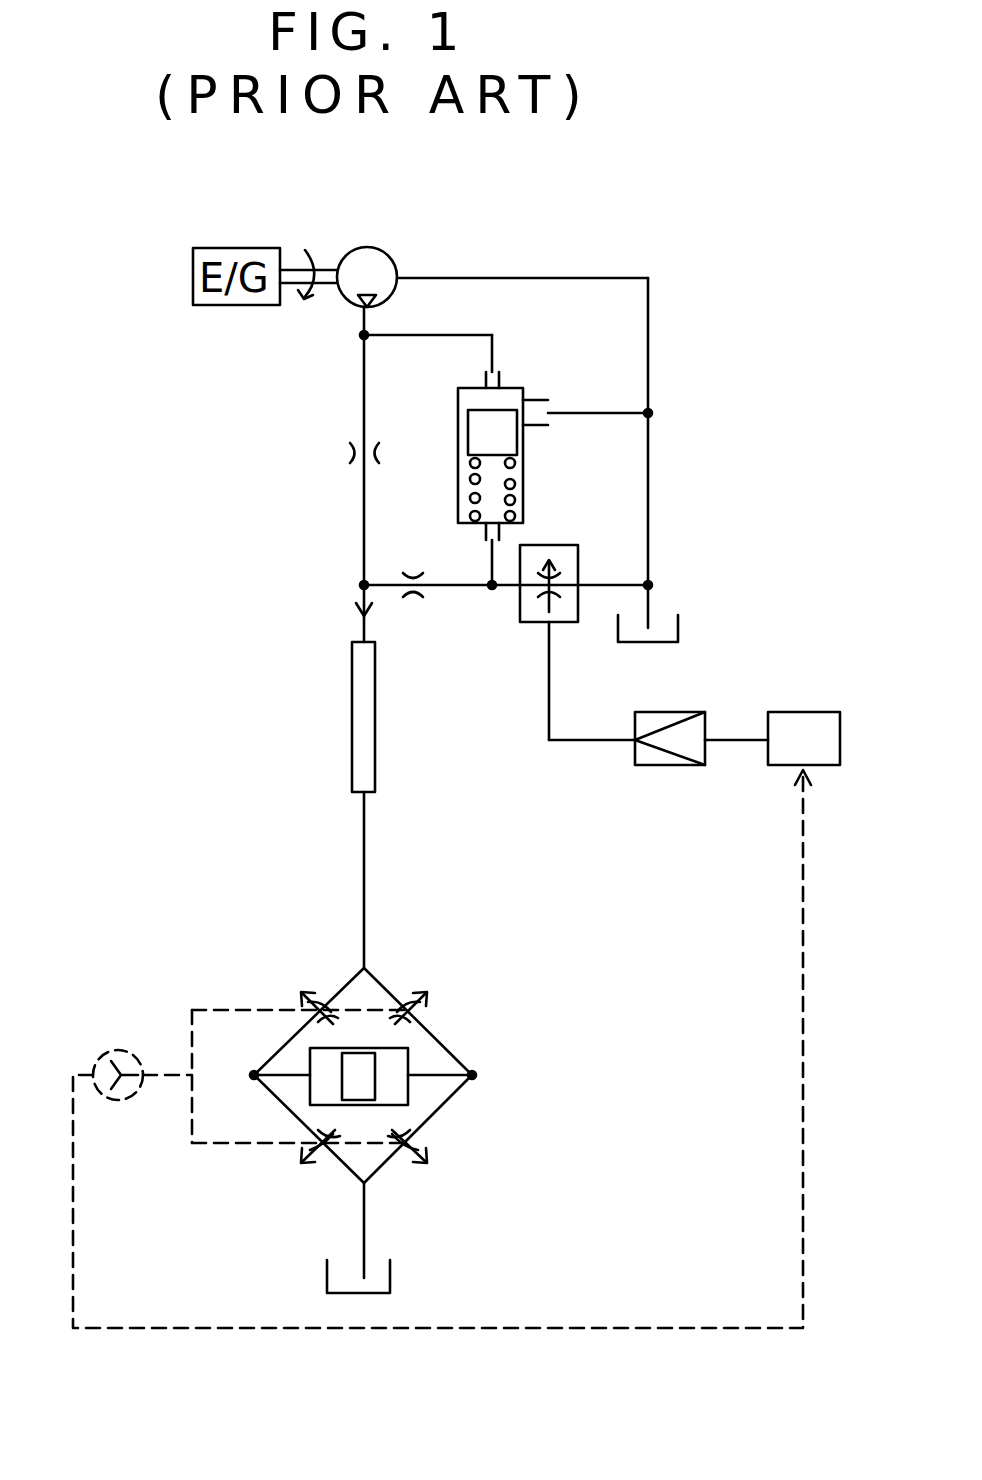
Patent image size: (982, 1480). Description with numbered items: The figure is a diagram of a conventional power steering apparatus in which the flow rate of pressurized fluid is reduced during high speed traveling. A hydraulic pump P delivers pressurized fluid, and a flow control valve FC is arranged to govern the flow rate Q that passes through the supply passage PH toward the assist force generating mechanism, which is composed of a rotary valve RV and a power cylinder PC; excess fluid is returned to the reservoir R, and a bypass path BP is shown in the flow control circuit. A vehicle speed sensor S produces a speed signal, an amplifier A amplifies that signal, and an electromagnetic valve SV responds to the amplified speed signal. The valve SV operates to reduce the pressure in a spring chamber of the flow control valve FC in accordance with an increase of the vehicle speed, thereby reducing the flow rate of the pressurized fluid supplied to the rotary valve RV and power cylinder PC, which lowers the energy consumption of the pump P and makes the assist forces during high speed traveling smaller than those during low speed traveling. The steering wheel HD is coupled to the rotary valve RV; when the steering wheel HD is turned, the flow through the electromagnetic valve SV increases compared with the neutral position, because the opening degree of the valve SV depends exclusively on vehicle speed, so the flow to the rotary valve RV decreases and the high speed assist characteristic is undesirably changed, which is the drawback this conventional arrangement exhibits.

The hydraulic pump P is at (372, 262).
The bypass valve BP is at (470, 334).
The flow control valve FC is at (672, 345).
The flow rate Q is at (344, 608).
The hydraulic pipe / passage PH is at (355, 705).
The electromagnetic valve SV is at (527, 598).
The reservoir R is at (683, 628).
The vehicle speed sensor S is at (800, 726).
The amplifier A is at (655, 766).
The rotary valve RV is at (328, 952).
The power cylinder PC is at (392, 1044).
The steering wheel HD is at (125, 1100).